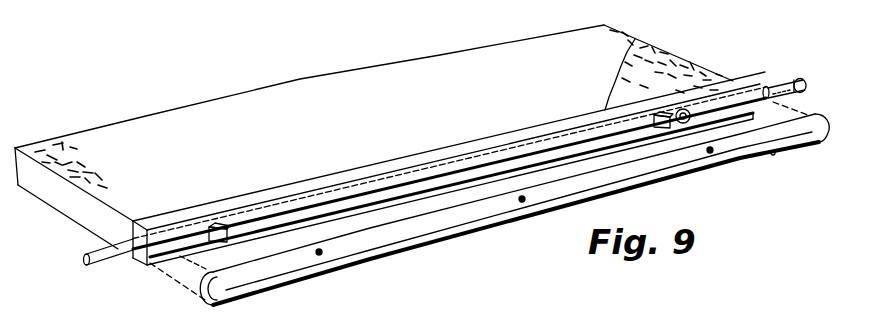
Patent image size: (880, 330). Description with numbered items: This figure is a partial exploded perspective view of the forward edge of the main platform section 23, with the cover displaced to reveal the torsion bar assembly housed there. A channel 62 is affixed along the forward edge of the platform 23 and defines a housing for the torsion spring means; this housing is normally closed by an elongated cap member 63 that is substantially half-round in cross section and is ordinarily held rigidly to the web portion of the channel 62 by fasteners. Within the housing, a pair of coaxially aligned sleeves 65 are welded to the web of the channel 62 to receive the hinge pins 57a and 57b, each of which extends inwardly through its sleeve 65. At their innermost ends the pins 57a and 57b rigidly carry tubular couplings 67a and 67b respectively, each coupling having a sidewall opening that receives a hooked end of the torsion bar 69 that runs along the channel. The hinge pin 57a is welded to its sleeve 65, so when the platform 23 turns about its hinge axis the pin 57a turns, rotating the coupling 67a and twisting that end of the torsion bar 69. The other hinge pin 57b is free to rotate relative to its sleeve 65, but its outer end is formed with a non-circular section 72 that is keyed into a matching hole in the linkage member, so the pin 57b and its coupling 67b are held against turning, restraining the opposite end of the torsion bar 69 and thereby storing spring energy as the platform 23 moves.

The panel 23 is at (331, 74).
The channel 62 is at (628, 42).
The cap member 63 is at (728, 160).
The sleeve 65 is at (149, 237).
The tubular coupling 67a is at (226, 225).
The tubular coupling 67b is at (655, 117).
The torsion bar 69 is at (483, 162).
The hinge pin 57a is at (110, 262).
The hinge pin 57b is at (788, 82).
The non-circular section 72 is at (807, 83).